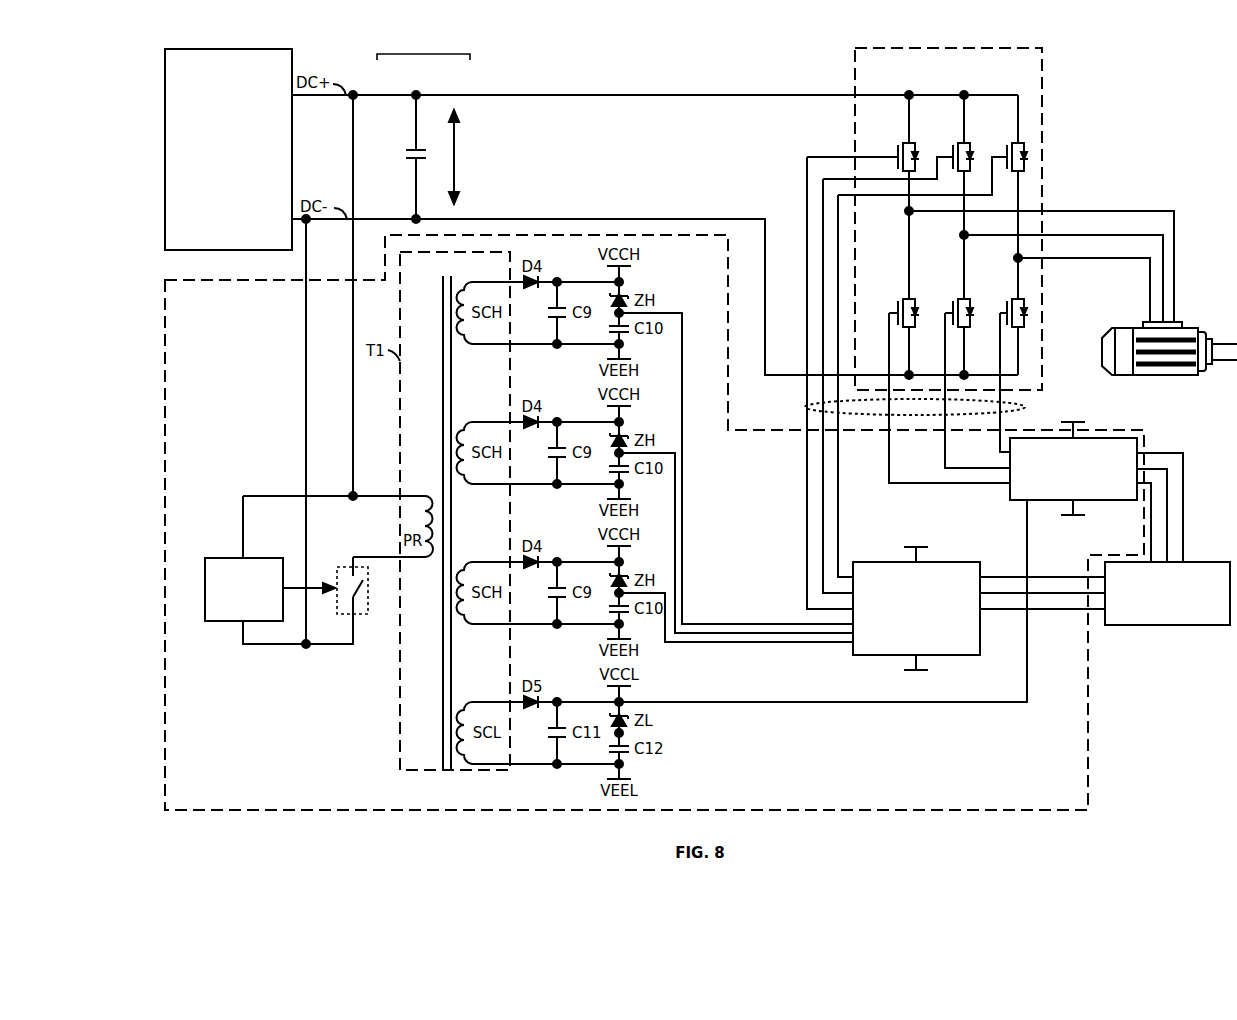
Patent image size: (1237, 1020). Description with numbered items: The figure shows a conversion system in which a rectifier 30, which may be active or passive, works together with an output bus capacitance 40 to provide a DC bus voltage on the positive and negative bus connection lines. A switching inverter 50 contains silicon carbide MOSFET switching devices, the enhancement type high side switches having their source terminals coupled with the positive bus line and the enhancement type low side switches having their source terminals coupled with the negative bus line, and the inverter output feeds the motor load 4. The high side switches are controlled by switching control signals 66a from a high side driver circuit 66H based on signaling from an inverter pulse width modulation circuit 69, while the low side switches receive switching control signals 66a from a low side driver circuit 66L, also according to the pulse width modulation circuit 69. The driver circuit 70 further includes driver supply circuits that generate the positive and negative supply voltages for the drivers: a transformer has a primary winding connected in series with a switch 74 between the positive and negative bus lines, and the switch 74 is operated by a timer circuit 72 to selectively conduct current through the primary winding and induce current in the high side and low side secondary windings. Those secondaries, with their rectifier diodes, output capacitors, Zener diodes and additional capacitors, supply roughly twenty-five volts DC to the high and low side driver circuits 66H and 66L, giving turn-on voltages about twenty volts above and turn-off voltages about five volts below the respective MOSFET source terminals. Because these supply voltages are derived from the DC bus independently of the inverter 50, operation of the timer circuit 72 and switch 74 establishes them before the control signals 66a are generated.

The motor 4 is at (1196, 328).
The rectifier 30 is at (227, 48).
The DC link capacitor 40 is at (430, 48).
The switching inverter 50 is at (954, 46).
The switching control signals 66a is at (806, 407).
The high side driver circuit 66H is at (885, 562).
The low side driver circuit 66L is at (1126, 430).
The PWM controller 69 is at (1203, 562).
The driver circuit 70 is at (196, 280).
The timer circuit 72 is at (224, 558).
The switch 74 is at (348, 560).